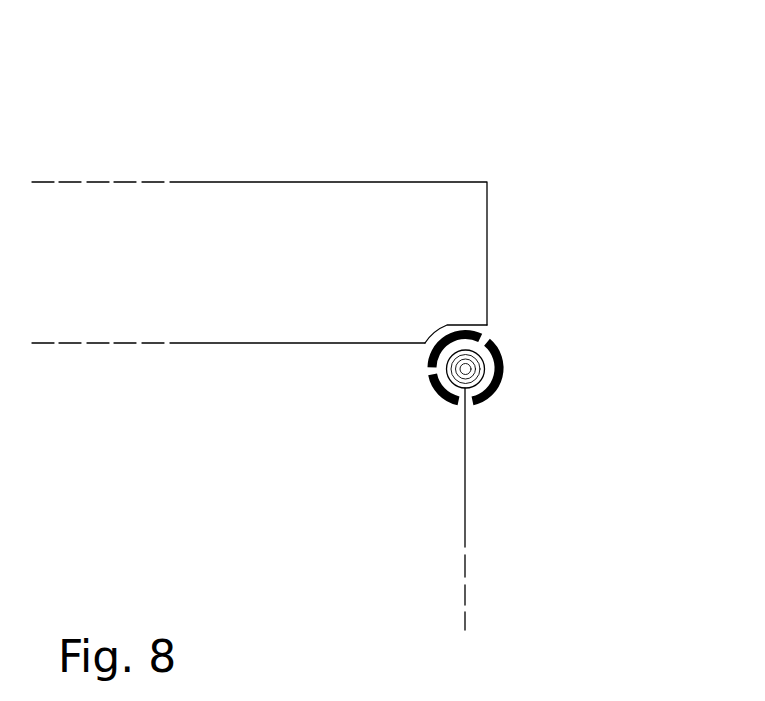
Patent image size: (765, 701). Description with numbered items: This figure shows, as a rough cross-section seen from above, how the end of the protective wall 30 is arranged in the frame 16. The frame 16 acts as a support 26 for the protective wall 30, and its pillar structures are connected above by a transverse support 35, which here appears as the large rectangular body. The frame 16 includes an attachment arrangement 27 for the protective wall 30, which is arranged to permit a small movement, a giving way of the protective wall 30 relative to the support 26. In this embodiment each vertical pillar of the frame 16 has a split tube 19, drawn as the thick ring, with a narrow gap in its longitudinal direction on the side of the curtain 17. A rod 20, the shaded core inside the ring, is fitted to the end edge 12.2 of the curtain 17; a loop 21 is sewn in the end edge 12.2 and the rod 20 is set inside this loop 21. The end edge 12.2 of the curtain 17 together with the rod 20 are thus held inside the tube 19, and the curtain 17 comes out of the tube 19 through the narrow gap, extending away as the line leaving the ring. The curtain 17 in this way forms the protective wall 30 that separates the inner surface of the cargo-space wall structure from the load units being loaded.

The frame 16 is at (274, 138).
The support 26 is at (413, 128).
The transverse support 35 is at (302, 276).
The closed loop 21 is at (476, 351).
The split tube 19 is at (503, 358).
The rod 20 is at (447, 369).
The end edge 12.2 is at (505, 426).
The curtain 17 is at (467, 508).
The attachment arrangement 27 is at (427, 440).
The protective wall 30 is at (499, 607).